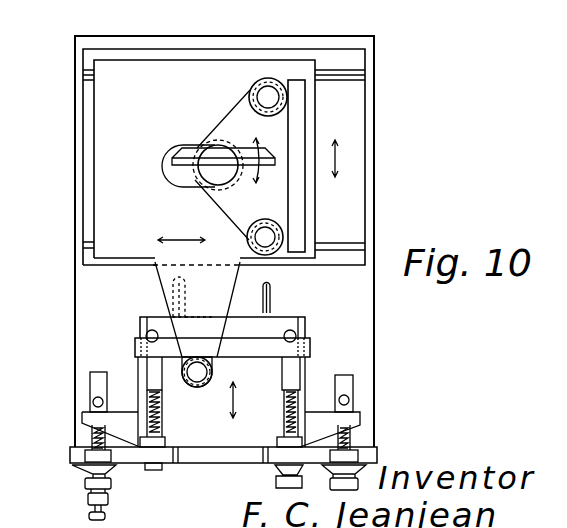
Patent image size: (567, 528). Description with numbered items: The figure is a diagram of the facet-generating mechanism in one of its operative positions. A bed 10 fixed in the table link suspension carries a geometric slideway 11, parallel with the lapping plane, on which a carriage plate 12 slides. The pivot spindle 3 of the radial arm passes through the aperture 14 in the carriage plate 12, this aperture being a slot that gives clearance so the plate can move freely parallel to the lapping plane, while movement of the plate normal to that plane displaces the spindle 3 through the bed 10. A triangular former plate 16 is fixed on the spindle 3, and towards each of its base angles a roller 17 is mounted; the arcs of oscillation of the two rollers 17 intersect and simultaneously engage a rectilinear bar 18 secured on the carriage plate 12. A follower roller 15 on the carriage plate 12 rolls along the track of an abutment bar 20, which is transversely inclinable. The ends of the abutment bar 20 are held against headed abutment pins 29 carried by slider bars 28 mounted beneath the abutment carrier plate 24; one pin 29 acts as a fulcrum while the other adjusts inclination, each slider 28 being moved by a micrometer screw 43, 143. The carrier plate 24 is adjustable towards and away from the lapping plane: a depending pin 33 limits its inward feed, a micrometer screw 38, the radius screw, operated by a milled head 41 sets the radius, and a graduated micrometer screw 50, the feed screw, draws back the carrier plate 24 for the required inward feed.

The pivot spindle 3 is at (217, 175).
The bed 10 is at (90, 163).
The geometric slideway 11 is at (87, 230).
The carriage plate 12 is at (147, 214).
The aperture 14 is at (172, 152).
The follower roller 15 is at (197, 387).
The triangular former plate 16 is at (222, 218).
The roller 17 is at (252, 88).
The bar 18 is at (297, 213).
The abutment bar 20 is at (250, 398).
The abutment carrier plate 24 is at (227, 455).
The slider bar 28 is at (150, 372).
The headed abutment pin 29 is at (150, 330).
The depending pin 33 is at (122, 413).
The micrometer screw 38 is at (86, 455).
The milled head 41 is at (110, 488).
The micrometer screw 43 is at (286, 424).
The graduated micrometer screw 50 is at (354, 440).
The micrometer screw 143 is at (153, 428).